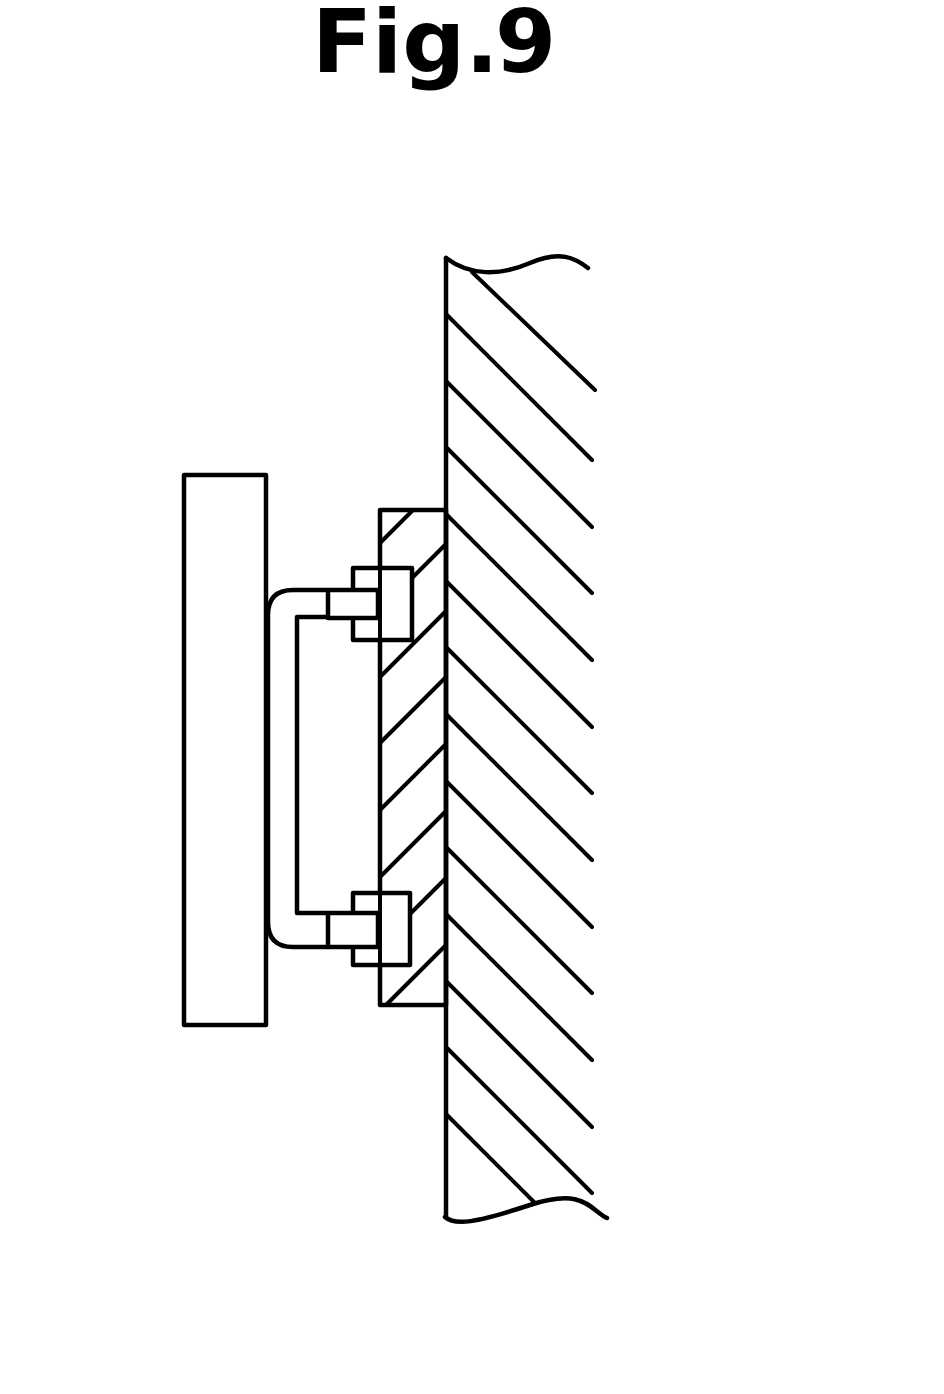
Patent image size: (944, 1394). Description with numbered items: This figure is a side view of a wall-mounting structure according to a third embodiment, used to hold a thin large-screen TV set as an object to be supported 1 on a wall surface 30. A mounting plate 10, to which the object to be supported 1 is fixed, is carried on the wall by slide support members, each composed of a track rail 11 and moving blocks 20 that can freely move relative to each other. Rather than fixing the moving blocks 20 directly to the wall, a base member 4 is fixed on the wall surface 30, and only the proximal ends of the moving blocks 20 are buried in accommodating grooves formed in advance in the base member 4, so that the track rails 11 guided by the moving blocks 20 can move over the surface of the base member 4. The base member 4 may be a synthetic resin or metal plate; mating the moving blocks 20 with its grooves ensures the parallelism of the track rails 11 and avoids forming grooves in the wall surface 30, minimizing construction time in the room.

The object to be supported 1 is at (185, 770).
The base member 4 is at (395, 1050).
The mounting plate 10 is at (297, 965).
The track rail 11 is at (363, 605).
The moving block 20 is at (372, 568).
The wall surface 30 is at (428, 365).